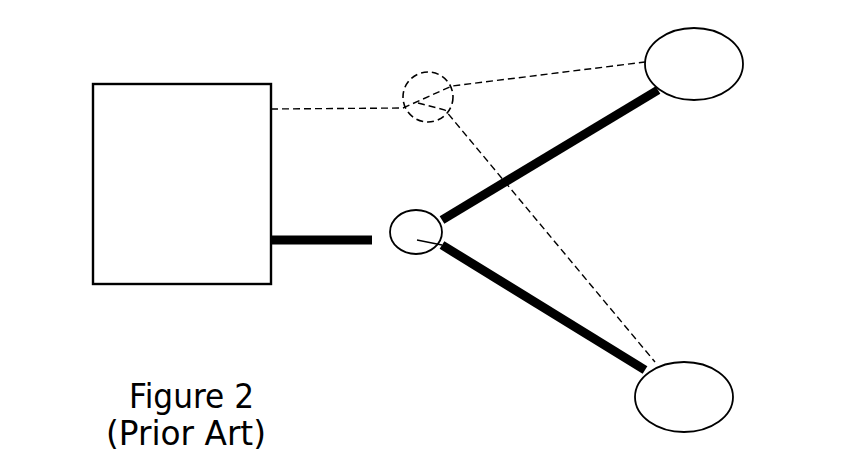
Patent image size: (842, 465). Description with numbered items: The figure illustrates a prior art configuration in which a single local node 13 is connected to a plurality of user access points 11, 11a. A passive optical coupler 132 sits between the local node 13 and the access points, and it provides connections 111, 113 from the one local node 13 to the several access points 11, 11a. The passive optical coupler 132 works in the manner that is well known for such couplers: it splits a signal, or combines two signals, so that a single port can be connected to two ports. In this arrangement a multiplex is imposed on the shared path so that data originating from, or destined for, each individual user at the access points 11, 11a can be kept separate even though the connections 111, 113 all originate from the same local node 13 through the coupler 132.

The local node 13 is at (182, 207).
The passive optical coupler 132 is at (442, 220).
The connection 111 is at (550, 155).
The connection 113 is at (543, 315).
The user access point 11a is at (729, 64).
The user access point 11 is at (708, 397).